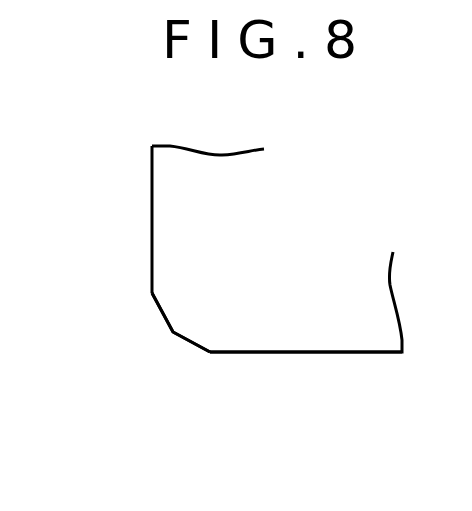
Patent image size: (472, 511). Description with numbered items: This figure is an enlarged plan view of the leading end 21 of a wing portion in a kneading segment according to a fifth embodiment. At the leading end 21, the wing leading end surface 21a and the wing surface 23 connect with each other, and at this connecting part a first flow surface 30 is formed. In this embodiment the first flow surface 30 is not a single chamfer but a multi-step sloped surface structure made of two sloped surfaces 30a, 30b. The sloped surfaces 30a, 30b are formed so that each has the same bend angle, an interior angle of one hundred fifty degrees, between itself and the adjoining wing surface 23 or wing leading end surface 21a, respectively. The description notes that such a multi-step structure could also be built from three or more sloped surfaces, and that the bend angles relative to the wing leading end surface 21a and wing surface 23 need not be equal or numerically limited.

The wing surface 23 is at (150, 196).
The first flow surface 30 is at (154, 419).
The sloped surface 30a is at (163, 312).
The sloped surface 30b is at (190, 342).
The wing leading end surface 21a is at (310, 353).
The leading end 21 is at (360, 355).